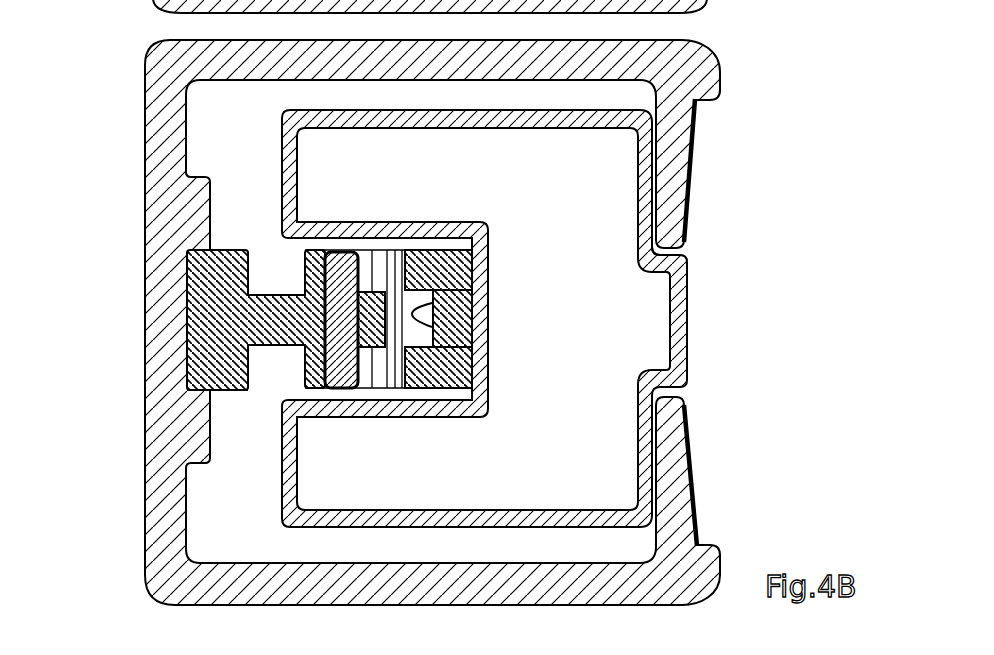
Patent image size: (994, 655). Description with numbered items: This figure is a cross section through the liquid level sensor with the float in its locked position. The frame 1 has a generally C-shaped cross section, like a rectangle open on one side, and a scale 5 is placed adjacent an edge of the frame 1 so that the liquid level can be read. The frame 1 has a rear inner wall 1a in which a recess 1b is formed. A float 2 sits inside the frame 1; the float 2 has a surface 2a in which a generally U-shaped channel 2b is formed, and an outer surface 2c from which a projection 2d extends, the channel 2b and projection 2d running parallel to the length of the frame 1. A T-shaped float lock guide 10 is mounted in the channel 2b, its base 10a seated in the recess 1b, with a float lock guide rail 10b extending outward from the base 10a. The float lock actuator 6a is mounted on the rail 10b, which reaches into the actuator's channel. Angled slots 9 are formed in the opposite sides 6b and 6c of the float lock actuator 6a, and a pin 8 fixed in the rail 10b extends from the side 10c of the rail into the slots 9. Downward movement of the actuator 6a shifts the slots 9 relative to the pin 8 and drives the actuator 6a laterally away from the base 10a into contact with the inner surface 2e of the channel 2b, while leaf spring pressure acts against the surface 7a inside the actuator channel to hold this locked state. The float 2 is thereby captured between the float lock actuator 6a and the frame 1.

The frame 1 is at (713, 58).
The rear inner wall 1a is at (187, 133).
The recess 1b is at (200, 262).
The float 2 is at (517, 123).
The surface 2a is at (278, 465).
The channel 2b is at (353, 238).
The outer surface 2c is at (667, 217).
The projection 2d is at (688, 315).
The inner surface 2e is at (447, 271).
The scale 5 is at (698, 118).
The float lock actuator 6a is at (458, 333).
The side of float lock actuator 6b is at (423, 250).
The side of float lock actuator 6c is at (438, 390).
The surface 7a is at (432, 327).
The pin 8 is at (340, 293).
The angled slot 9 is at (385, 267).
The float lock guide 10 is at (217, 323).
The base 10a is at (227, 391).
The float lock guide rail 10b is at (277, 292).
The side of rail 10c is at (387, 332).